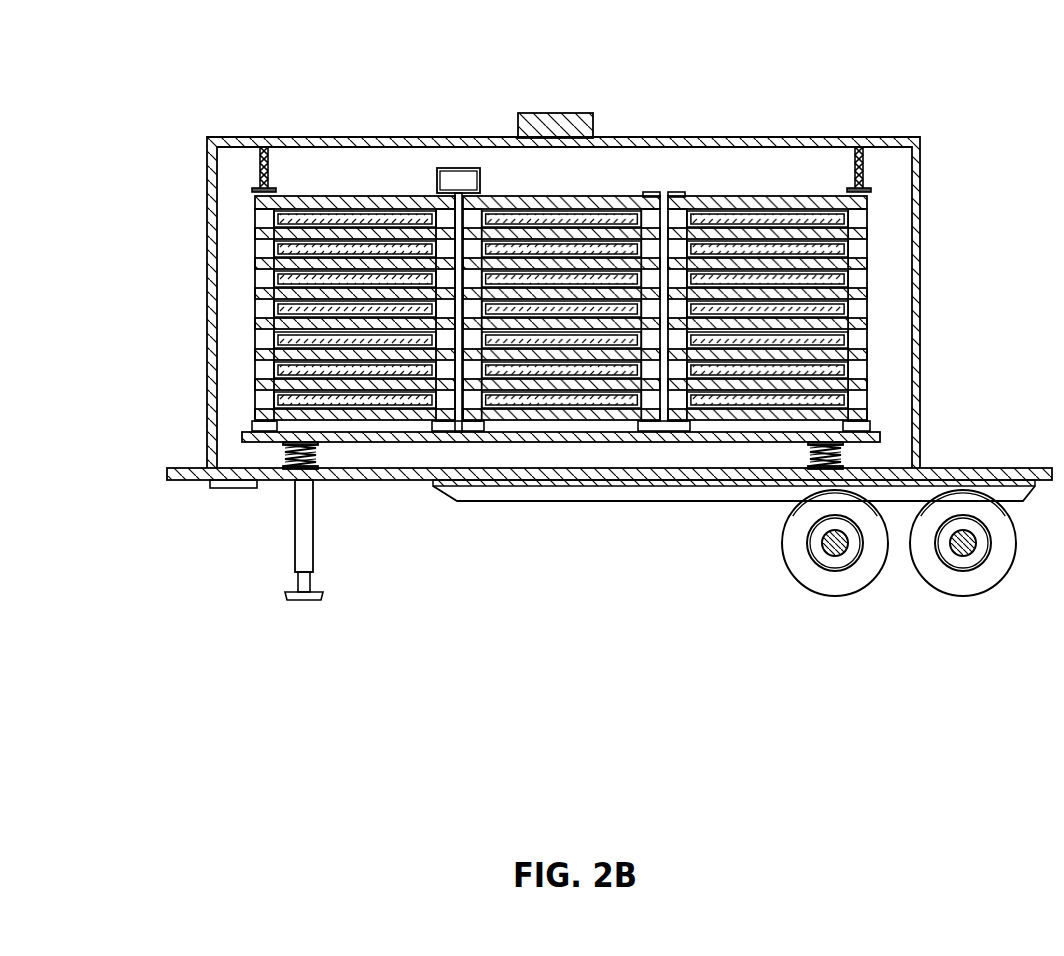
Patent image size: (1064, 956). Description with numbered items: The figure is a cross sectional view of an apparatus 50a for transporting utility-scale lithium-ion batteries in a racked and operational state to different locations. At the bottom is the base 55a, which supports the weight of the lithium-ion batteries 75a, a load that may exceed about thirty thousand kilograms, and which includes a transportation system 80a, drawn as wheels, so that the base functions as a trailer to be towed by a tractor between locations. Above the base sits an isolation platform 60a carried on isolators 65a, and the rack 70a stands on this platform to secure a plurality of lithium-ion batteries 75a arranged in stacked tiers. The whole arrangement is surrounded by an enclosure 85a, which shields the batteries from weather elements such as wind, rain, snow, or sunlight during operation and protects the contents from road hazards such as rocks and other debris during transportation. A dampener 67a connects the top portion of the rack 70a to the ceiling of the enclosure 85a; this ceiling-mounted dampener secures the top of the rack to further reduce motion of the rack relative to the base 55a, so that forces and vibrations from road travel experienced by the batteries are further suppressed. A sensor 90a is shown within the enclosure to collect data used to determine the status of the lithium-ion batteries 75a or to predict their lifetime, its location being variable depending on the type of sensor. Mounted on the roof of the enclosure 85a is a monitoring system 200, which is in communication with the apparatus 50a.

The apparatus 50a is at (305, 652).
The base 55a is at (548, 497).
The isolation platform 60a is at (888, 437).
The isolator 65a is at (282, 458).
The dampener 67a is at (260, 173).
The rack 70a is at (678, 217).
The lithium-ion batteries 75a is at (373, 218).
The transportation system 80a is at (808, 580).
The enclosure 85a is at (212, 316).
The sensor 90a is at (456, 168).
The monitoring system 200 is at (567, 112).